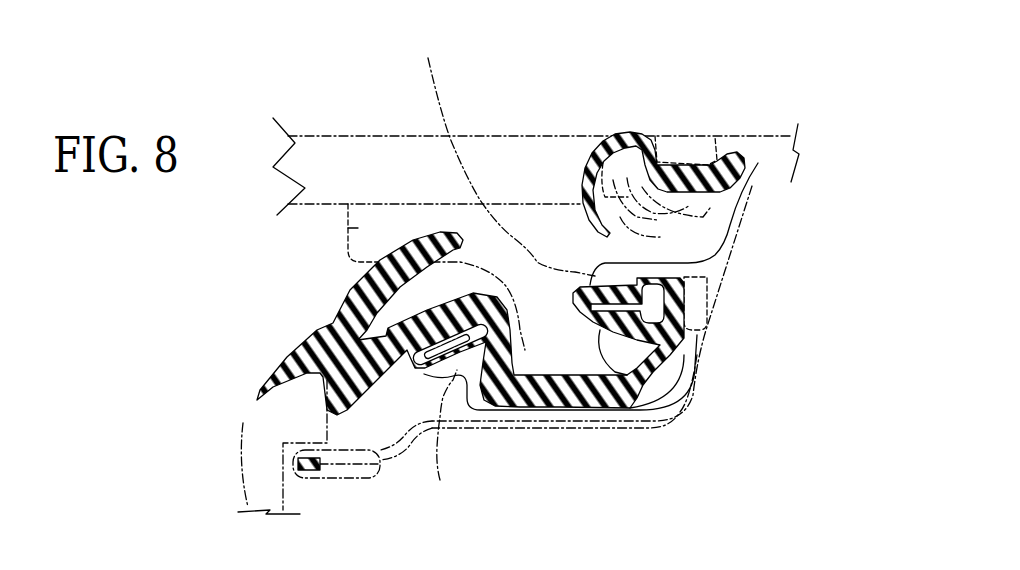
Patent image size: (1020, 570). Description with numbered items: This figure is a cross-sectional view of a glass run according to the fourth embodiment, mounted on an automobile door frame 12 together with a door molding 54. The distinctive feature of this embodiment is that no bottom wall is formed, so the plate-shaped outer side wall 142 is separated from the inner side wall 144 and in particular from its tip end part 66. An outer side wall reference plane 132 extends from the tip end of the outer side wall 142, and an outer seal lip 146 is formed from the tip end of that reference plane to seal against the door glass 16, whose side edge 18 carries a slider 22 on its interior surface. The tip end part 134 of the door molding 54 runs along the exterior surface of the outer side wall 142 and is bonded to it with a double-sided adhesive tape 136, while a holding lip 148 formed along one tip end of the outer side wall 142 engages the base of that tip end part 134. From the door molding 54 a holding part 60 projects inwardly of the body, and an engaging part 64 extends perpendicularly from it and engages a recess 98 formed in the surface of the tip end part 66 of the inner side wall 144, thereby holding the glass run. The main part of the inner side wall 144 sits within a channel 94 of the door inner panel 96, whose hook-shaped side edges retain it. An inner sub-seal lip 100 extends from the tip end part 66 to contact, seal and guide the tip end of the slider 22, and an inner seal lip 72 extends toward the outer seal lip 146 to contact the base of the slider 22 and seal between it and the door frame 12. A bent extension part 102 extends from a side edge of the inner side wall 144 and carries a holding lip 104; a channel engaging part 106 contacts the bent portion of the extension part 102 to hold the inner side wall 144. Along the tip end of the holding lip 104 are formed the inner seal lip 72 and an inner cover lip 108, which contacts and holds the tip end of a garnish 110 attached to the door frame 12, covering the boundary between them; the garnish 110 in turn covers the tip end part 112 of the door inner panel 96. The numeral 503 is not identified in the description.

The door frame 12 is at (683, 425).
The door glass 16 is at (330, 135).
The side edge 18 is at (632, 133).
The slider 22 is at (357, 228).
The door molding 54 is at (788, 130).
The holding part 60 is at (725, 233).
The engaging part 64 is at (507, 155).
The tip end part 66 is at (690, 313).
The inner seal lip 72 is at (372, 272).
The channel 94 is at (617, 410).
The door inner panel 96 is at (497, 430).
The recess 98 is at (684, 278).
The inner sub-seal lip 100 is at (645, 385).
The extension part 102 is at (525, 405).
The holding lip 104 is at (330, 327).
The channel engaging part 106 is at (443, 425).
The inner cover lip 108 is at (312, 377).
The garnish 110 is at (242, 428).
The tip end part 112 is at (283, 460).
The outer side wall reference plane 132 is at (577, 166).
The tip end part 134 is at (668, 163).
The double-sided adhesive tape 136 is at (684, 165).
The outer side wall 142 is at (718, 157).
The inner side wall 144 is at (567, 414).
The outer seal lip 146 is at (585, 182).
The holding lip 148 is at (745, 168).
The seal tip 503 is at (612, 132).